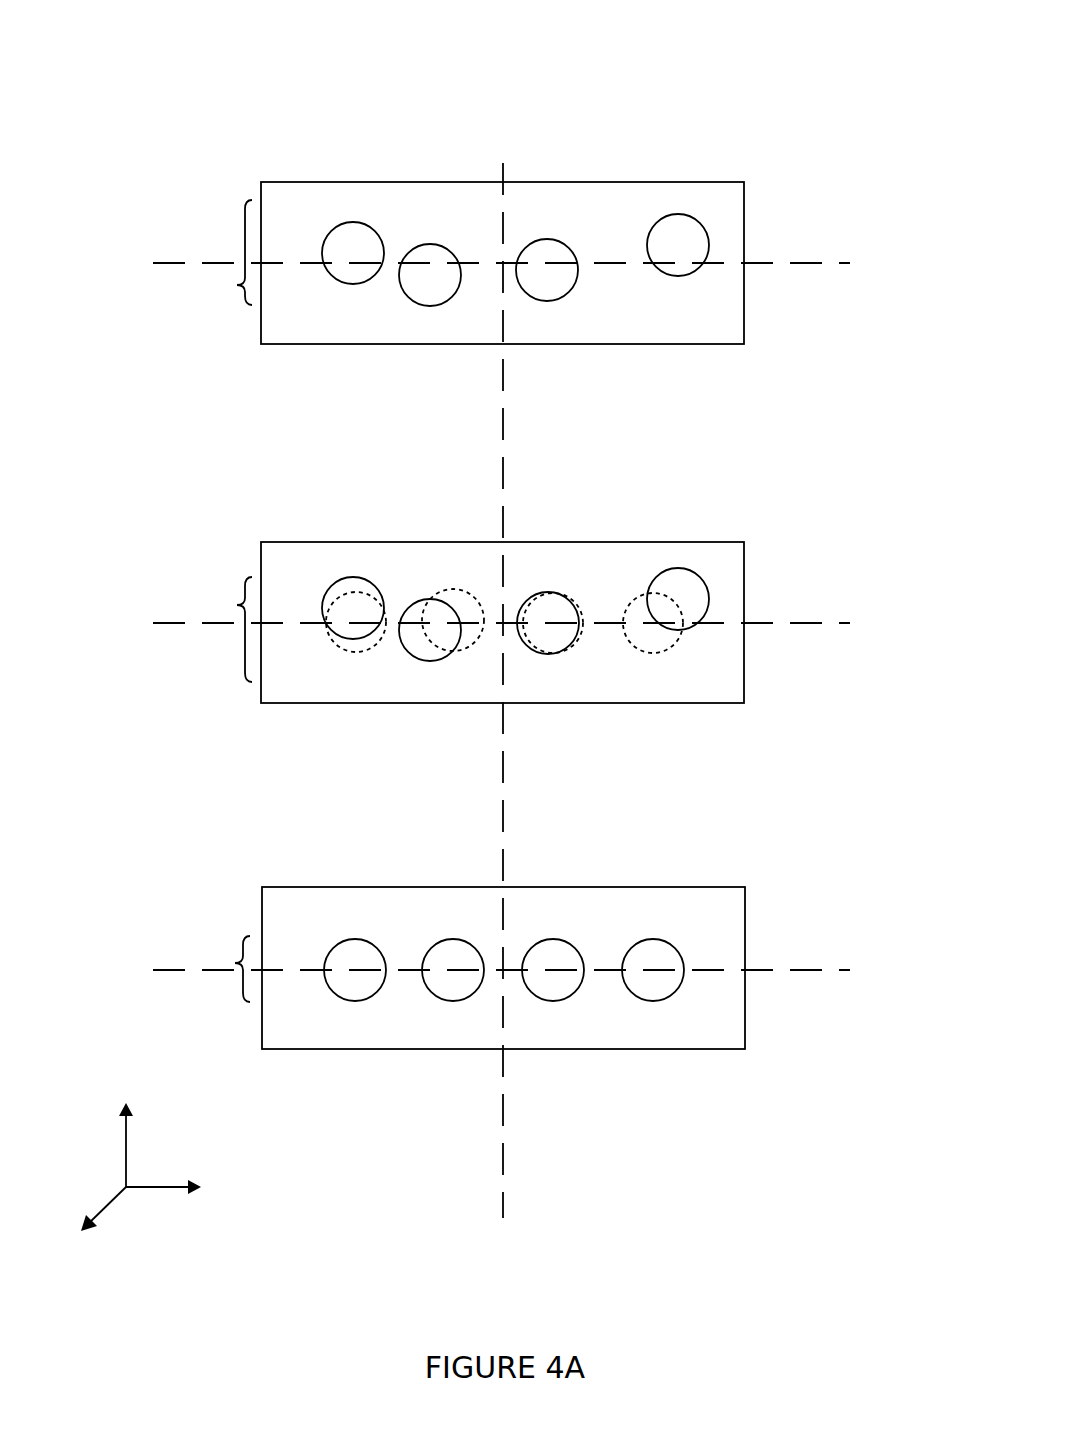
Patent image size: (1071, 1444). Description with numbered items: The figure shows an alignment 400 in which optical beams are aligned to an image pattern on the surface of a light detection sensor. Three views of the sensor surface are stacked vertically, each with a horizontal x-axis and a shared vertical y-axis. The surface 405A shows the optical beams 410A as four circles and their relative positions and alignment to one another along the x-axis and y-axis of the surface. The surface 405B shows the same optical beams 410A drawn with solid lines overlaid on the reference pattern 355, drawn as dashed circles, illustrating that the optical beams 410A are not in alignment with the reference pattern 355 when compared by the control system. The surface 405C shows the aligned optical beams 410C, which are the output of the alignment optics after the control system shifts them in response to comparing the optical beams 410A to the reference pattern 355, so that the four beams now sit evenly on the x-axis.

The alignment 400 is at (122, 46).
The surface 405A is at (744, 205).
The surface 405B is at (714, 540).
The surface 405C is at (745, 905).
The optical beams 410A is at (381, 441).
The aligned optical beams 410C is at (237, 963).
The reference pattern 355 is at (457, 592).